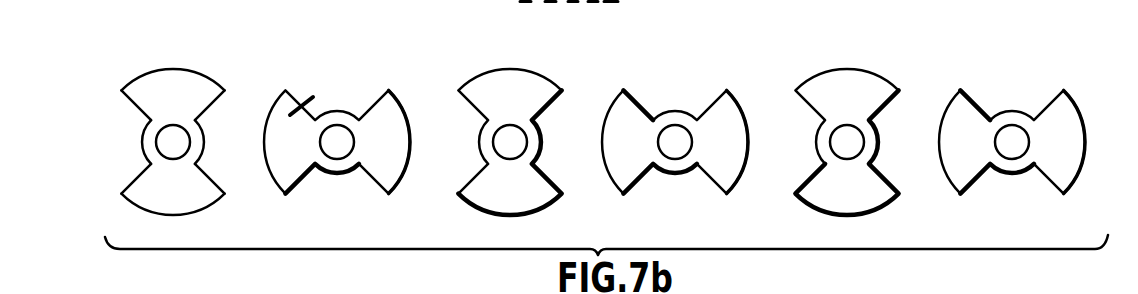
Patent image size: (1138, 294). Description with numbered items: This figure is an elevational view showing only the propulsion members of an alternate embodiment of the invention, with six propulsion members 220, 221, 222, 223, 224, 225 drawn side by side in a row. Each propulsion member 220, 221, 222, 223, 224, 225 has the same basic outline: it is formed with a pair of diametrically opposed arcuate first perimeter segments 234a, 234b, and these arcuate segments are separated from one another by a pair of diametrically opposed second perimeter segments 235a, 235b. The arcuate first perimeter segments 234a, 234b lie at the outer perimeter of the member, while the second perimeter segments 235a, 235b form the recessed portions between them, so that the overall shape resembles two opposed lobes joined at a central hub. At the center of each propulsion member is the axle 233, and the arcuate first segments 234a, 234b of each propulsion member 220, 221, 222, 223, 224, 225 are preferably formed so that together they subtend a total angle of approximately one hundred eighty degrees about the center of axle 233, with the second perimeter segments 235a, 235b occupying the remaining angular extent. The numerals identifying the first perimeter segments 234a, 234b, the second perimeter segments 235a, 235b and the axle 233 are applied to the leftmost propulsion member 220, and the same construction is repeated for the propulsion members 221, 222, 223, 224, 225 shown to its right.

The propulsion member 220 is at (167, 126).
The propulsion member 221 is at (300, 106).
The propulsion member 222 is at (502, 88).
The propulsion member 223 is at (630, 105).
The propulsion member 224 is at (850, 88).
The propulsion member 225 is at (963, 103).
The axle 233 is at (176, 139).
The arcuate first perimeter segment 234a is at (168, 70).
The arcuate first perimeter segment 234b is at (150, 212).
The second perimeter segment 235a is at (152, 125).
The second perimeter segment 235b is at (203, 150).